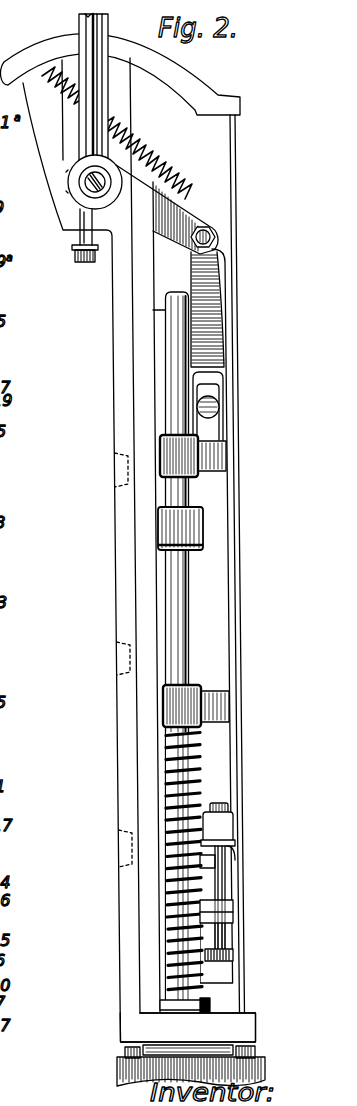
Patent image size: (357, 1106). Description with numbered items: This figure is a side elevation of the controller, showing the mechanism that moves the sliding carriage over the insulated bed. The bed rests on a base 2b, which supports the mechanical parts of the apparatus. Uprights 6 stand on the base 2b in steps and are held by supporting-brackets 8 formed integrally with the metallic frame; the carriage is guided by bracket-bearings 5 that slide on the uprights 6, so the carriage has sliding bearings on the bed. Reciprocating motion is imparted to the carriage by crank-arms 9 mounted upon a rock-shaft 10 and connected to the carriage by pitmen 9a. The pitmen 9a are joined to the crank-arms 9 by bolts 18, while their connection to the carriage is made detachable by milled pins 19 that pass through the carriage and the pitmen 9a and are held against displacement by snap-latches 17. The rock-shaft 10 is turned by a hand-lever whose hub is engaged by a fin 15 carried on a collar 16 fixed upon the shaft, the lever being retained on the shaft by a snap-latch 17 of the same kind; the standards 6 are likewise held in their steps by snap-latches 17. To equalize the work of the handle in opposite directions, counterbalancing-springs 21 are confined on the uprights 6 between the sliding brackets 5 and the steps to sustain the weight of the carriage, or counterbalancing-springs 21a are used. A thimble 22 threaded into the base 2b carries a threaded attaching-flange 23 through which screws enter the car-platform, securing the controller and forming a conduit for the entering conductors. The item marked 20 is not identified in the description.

The base 2b is at (187, 1027).
The bracket-bearings 5 is at (190, 458).
The uprights 6 is at (175, 373).
The supporting-brackets 8 is at (176, 529).
The crank-arms 9 is at (184, 199).
The pitmen 9a is at (203, 300).
The rock-shaft 10 is at (63, 111).
The fin 15 is at (234, 955).
The collar 16 is at (222, 886).
The snap-latch 17 is at (236, 1010).
The bolts 18 is at (49, 235).
The milled pins 19 is at (219, 408).
The washer 20 is at (210, 1000).
The counterbalancing-springs 21 is at (162, 778).
The counterbalancing-springs 21a is at (165, 158).
The thimble 22 is at (140, 1050).
The attaching-flange 23 is at (130, 1068).